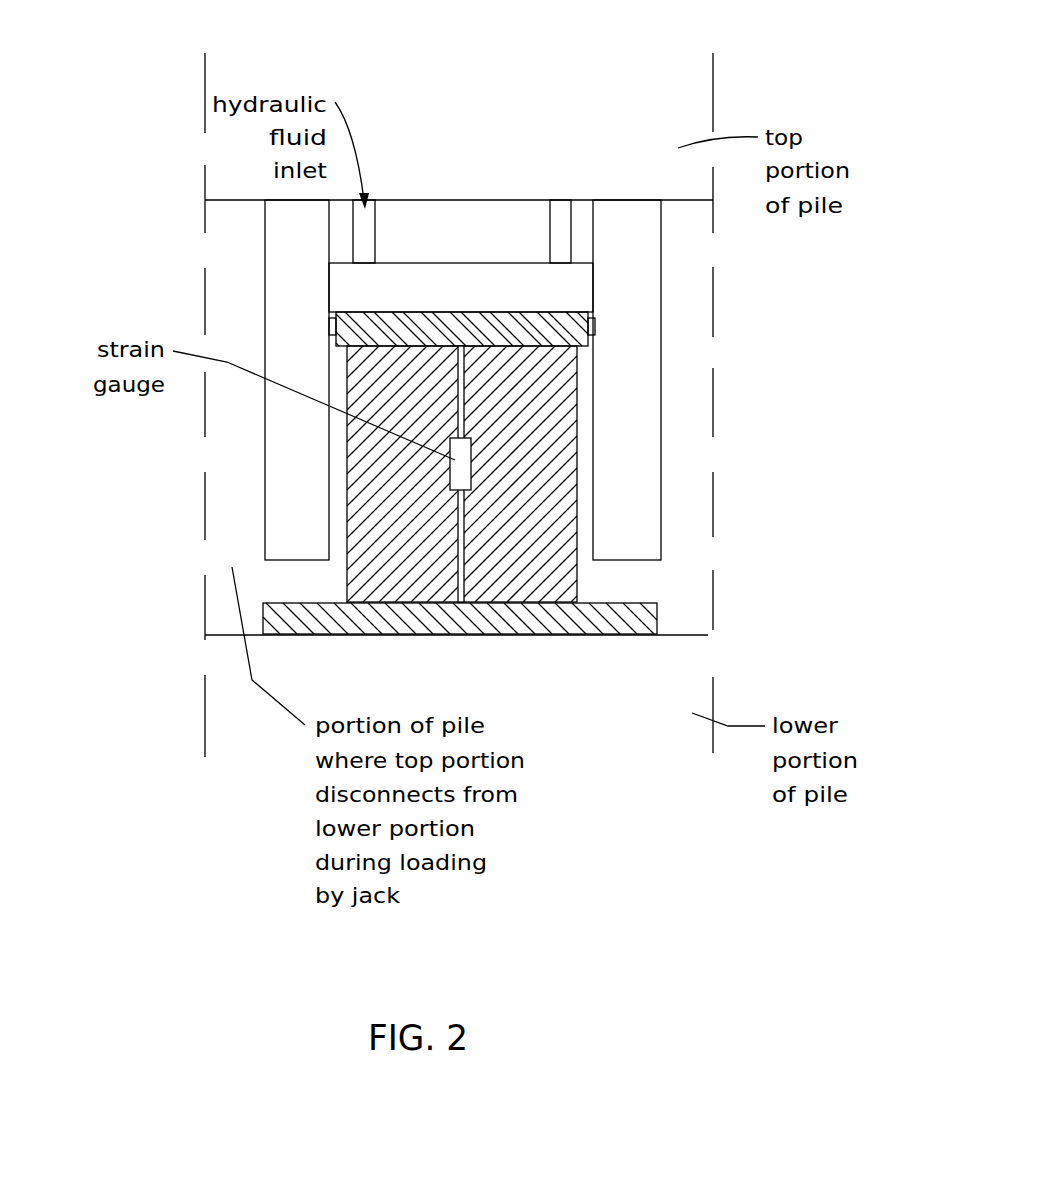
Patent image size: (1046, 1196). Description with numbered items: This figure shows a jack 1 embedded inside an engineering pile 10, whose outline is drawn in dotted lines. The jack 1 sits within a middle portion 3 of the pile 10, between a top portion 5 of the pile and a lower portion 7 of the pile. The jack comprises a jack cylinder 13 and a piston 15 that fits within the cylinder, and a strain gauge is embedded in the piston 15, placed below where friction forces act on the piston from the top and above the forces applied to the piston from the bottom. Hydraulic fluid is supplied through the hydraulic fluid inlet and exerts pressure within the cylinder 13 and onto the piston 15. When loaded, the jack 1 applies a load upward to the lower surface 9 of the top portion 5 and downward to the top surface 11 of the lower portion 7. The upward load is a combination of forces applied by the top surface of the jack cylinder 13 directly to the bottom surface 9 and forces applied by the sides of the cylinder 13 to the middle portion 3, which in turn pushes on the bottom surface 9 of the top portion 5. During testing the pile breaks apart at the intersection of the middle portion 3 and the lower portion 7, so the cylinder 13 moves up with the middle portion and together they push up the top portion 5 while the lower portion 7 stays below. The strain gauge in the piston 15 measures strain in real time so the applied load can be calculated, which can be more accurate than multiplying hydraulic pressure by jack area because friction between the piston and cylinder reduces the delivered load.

The engineering pile 10 is at (172, 157).
The top portion of the pile 5 is at (685, 113).
The lower surface of the top portion 9 is at (685, 200).
The jack cylinder 13 is at (642, 325).
The jack 1 is at (642, 393).
The middle portion of the pile 3 is at (695, 455).
The top surface of the lower portion 11 is at (683, 632).
The lower portion of the pile 7 is at (683, 649).
The piston of hydraulic jack 15 is at (372, 552).